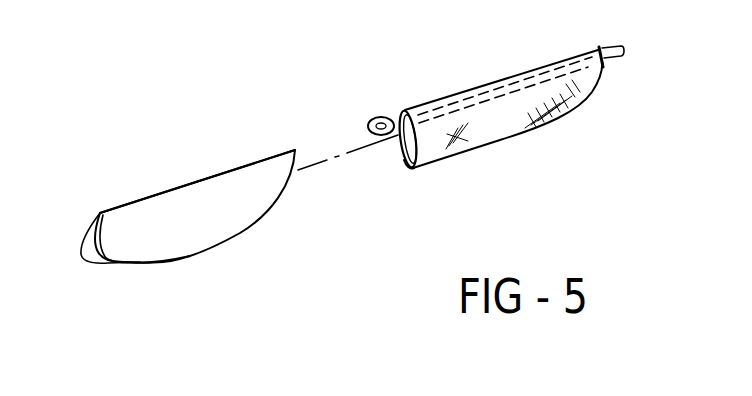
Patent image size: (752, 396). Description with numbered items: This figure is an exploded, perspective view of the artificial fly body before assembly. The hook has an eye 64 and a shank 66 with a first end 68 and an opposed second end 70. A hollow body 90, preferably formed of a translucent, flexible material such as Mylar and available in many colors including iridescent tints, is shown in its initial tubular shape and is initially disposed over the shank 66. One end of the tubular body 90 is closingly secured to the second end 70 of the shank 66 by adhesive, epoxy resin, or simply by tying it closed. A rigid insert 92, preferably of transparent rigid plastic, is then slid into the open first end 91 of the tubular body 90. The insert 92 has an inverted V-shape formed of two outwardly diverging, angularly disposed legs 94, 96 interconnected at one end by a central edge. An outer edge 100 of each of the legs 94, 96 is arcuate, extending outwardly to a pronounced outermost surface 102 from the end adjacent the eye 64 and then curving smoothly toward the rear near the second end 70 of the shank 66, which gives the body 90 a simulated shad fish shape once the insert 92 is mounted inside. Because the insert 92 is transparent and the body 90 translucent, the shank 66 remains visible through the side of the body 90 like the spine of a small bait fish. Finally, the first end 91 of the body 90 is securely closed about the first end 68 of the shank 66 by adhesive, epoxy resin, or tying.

The eye 64 is at (370, 122).
The shank 66 is at (468, 97).
The first end 68 is at (398, 118).
The second end 70 is at (610, 55).
The hollow body 90 is at (480, 138).
The open first end 91 is at (412, 170).
The rigid insert 92 is at (173, 196).
The leg 94 is at (93, 255).
The leg 96 is at (145, 245).
The outer edge 100 is at (246, 233).
The outermost surface 102 is at (175, 260).